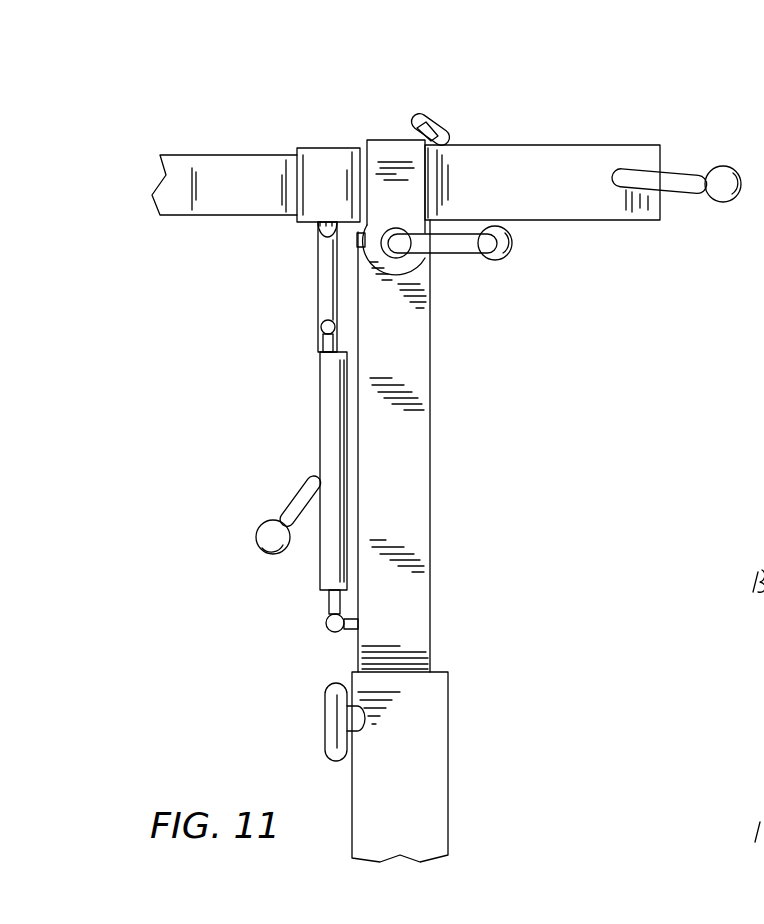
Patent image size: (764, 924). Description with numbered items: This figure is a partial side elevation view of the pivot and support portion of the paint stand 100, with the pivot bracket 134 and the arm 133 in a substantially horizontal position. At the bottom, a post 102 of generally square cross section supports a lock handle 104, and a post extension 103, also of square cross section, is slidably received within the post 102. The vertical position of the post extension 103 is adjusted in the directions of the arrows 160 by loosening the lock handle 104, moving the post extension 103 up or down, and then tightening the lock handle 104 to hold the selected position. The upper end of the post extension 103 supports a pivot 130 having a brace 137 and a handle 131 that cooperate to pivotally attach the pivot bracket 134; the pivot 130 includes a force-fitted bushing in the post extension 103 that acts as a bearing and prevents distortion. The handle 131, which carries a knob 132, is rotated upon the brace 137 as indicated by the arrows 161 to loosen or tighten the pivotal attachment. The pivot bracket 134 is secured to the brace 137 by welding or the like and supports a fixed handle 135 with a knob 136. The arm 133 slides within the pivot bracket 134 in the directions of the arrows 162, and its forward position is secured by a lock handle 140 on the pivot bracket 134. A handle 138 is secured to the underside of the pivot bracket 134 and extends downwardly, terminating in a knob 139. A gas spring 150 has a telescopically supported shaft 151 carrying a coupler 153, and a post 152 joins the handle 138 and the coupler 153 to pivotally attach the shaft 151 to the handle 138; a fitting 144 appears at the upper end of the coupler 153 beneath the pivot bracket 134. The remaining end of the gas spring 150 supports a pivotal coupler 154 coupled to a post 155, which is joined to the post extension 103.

The paint stand 100 is at (592, 458).
The post 102 is at (448, 738).
The post extension 103 is at (430, 478).
The lock handle 104 is at (322, 720).
The pivot 130 is at (438, 285).
The handle 131 is at (457, 256).
The knob 132 is at (512, 243).
The arm 133 is at (178, 155).
The pivot bracket 134 is at (590, 145).
The fixed handle 135 is at (650, 172).
The knob 136 is at (730, 202).
The brace 137 is at (418, 175).
The handle 138 is at (318, 479).
The clamp handle knob 139 is at (257, 540).
The lock handle 140 is at (448, 127).
The sliding collar 144 is at (318, 226).
The gas spring 150 is at (320, 428).
The shaft 151 is at (326, 340).
The post 152 is at (320, 326).
The coupler 153 is at (330, 320).
The pivotal coupler 154 is at (326, 626).
The post 155 is at (350, 632).
The arrows 160 is at (399, 632).
The arrows 161 is at (362, 208).
The arrows 162 is at (330, 130).